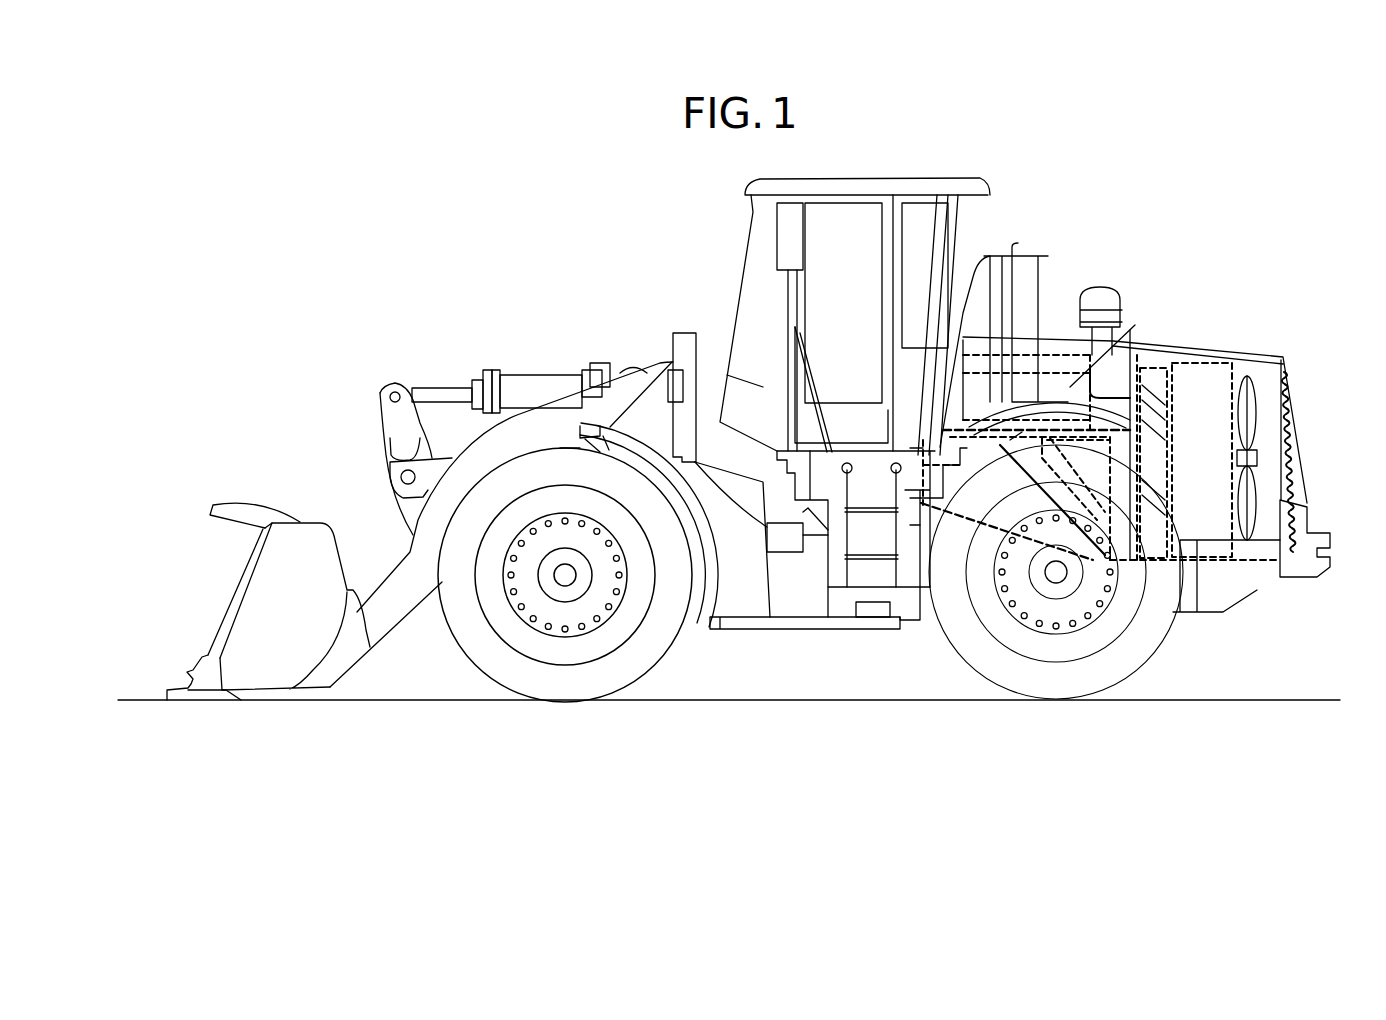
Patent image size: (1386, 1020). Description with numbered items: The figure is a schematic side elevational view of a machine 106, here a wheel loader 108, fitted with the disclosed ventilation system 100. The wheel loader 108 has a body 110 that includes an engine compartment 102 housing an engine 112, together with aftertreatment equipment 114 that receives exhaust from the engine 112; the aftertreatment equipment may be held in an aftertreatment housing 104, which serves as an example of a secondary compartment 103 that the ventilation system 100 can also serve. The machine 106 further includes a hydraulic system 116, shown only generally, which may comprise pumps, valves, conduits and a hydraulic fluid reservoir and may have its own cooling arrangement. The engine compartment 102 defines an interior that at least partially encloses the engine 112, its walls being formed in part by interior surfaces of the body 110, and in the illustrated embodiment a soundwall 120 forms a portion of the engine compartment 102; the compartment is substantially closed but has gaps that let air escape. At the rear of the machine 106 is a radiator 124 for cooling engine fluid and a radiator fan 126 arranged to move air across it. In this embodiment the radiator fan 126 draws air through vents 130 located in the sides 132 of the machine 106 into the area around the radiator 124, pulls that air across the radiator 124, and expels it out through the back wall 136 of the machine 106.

The ventilation system 100 is at (1124, 292).
The engine compartment 102 is at (977, 505).
The secondary compartment 103 is at (1075, 355).
The aftertreatment housing 104 is at (1055, 355).
The machine 106 is at (462, 203).
The wheel loader 108 is at (457, 288).
The body 110 is at (1257, 590).
The engine 112 is at (975, 470).
The aftertreatment equipment 114 is at (1130, 348).
The hydraulic system 116 is at (1005, 517).
The soundwall 120 is at (1150, 435).
The radiator 124 is at (1218, 378).
The radiator fan 126 is at (1243, 420).
The vents 130 is at (1162, 452).
The sides 132 is at (1160, 366).
The back wall 136 is at (1285, 365).